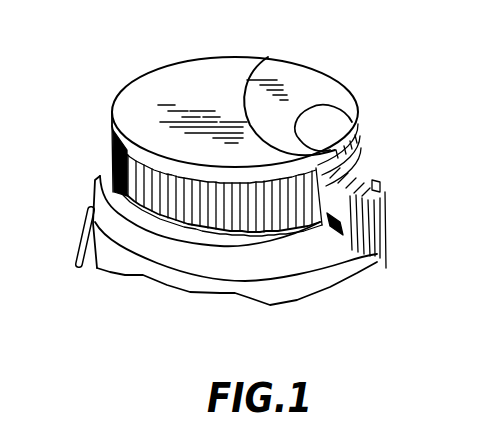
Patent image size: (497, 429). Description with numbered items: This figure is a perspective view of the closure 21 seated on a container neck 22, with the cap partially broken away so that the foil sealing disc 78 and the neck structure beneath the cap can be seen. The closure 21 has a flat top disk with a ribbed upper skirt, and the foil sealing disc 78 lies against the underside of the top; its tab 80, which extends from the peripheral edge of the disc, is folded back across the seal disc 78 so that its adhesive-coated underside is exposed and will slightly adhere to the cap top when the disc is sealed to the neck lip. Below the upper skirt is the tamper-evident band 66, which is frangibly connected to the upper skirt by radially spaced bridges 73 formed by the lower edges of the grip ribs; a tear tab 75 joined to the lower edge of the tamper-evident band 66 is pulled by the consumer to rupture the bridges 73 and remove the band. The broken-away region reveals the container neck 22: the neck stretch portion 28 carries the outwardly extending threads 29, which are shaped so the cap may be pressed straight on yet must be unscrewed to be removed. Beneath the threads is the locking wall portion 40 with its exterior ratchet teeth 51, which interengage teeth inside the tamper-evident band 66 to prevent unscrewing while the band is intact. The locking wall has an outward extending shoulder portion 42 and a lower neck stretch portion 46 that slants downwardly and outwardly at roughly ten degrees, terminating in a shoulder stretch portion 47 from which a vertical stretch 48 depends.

The closure 21 is at (169, 87).
The foil sealing disc 78 is at (287, 70).
The tab 80 is at (323, 127).
The bridges 73 is at (114, 158).
The tear tab 75 is at (90, 232).
The neck stretch portion 28 is at (367, 153).
The threads 29 is at (363, 167).
The locking wall portion 40 is at (380, 187).
The lower neck stretch portion 46 is at (384, 203).
The shoulder stretch portion 47 is at (380, 228).
The vertical stretch 48 is at (382, 250).
The ratchet teeth 51 is at (353, 208).
The shoulder portion 42 is at (322, 218).
The container neck 22 is at (117, 268).
The tamper-evident band 66 is at (180, 256).